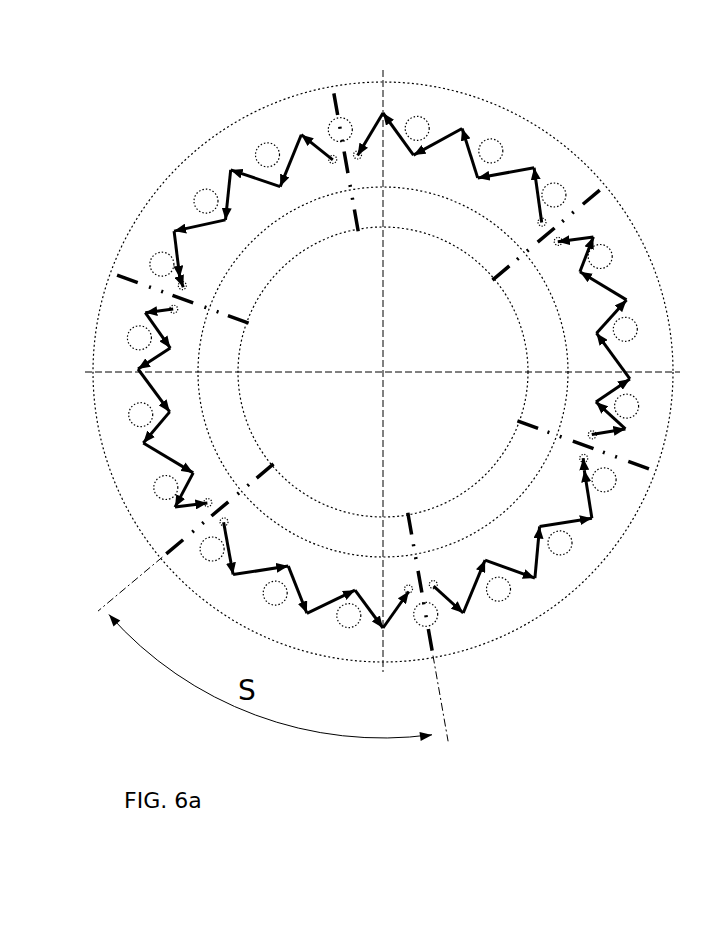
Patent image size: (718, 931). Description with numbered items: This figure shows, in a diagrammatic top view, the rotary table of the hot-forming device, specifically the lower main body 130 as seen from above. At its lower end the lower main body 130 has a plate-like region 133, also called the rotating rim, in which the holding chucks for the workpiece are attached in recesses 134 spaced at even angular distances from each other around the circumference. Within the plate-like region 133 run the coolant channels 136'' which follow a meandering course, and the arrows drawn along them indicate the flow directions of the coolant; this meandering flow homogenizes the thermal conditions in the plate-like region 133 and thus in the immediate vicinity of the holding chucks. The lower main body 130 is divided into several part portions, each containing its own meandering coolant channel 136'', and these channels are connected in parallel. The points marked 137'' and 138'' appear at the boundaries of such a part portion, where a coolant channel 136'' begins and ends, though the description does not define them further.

The lower main body 130 is at (437, 218).
The plate-like region 133 is at (605, 213).
The recesses 134 is at (604, 257).
The coolant channels 136'' is at (295, 589).
The thread anchoring point 137'' is at (184, 572).
The thread anchoring point 138'' is at (385, 655).